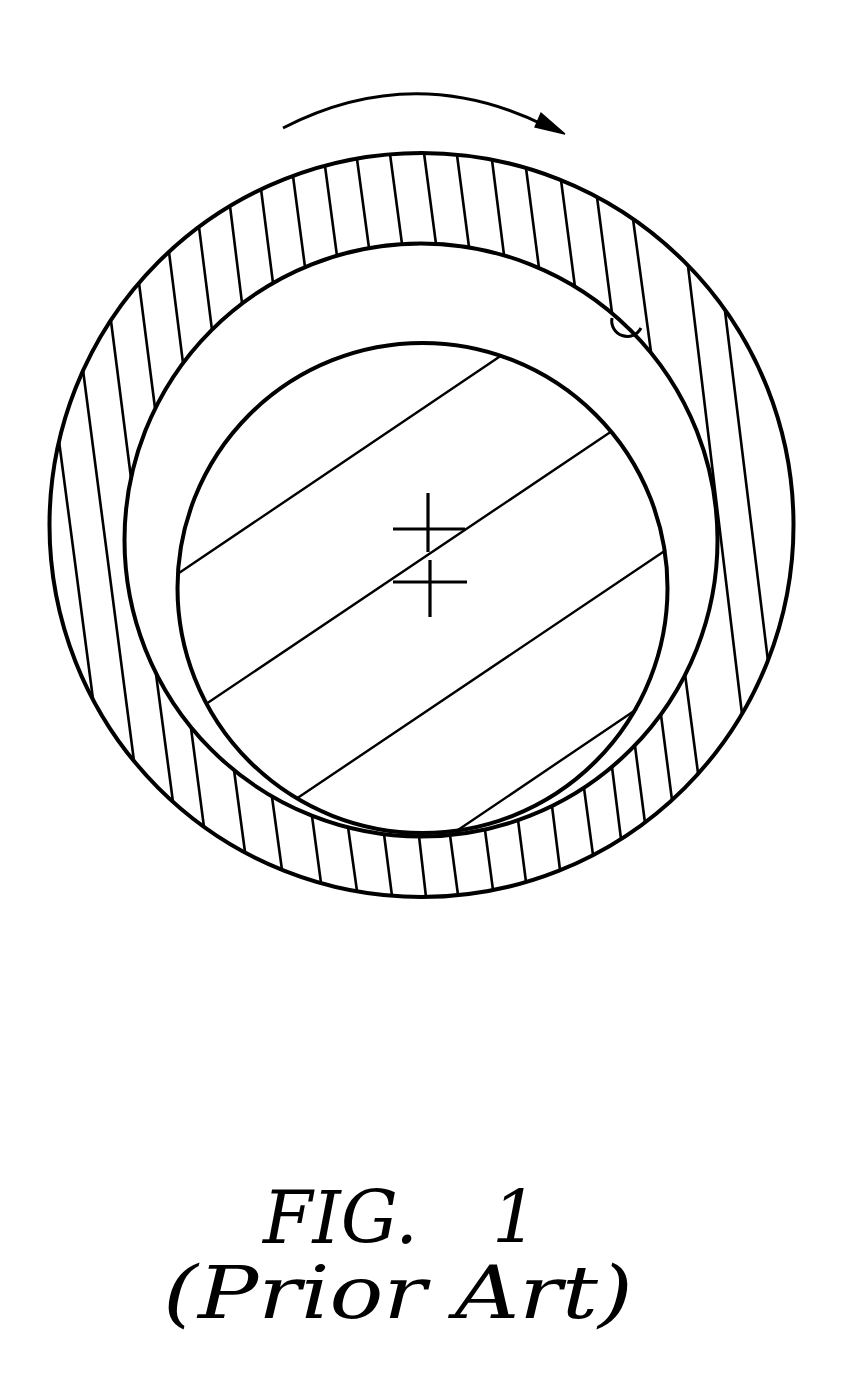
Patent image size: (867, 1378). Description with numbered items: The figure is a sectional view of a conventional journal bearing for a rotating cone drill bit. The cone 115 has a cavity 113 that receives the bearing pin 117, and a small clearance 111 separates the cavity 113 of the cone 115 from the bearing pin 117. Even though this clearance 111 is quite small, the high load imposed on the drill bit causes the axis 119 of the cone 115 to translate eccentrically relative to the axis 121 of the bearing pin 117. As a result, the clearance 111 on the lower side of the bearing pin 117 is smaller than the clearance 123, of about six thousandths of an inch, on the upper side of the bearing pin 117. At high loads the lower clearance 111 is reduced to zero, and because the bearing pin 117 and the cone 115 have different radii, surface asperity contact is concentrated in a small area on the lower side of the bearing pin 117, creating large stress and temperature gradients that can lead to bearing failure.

The clearance 111 is at (445, 836).
The cavity 113 is at (620, 331).
The cone 115 is at (587, 220).
The bearing pin 117 is at (398, 700).
The axis of the cone 119 is at (435, 520).
The axis of the bearing pin 121 is at (436, 600).
The clearance 123 is at (410, 297).